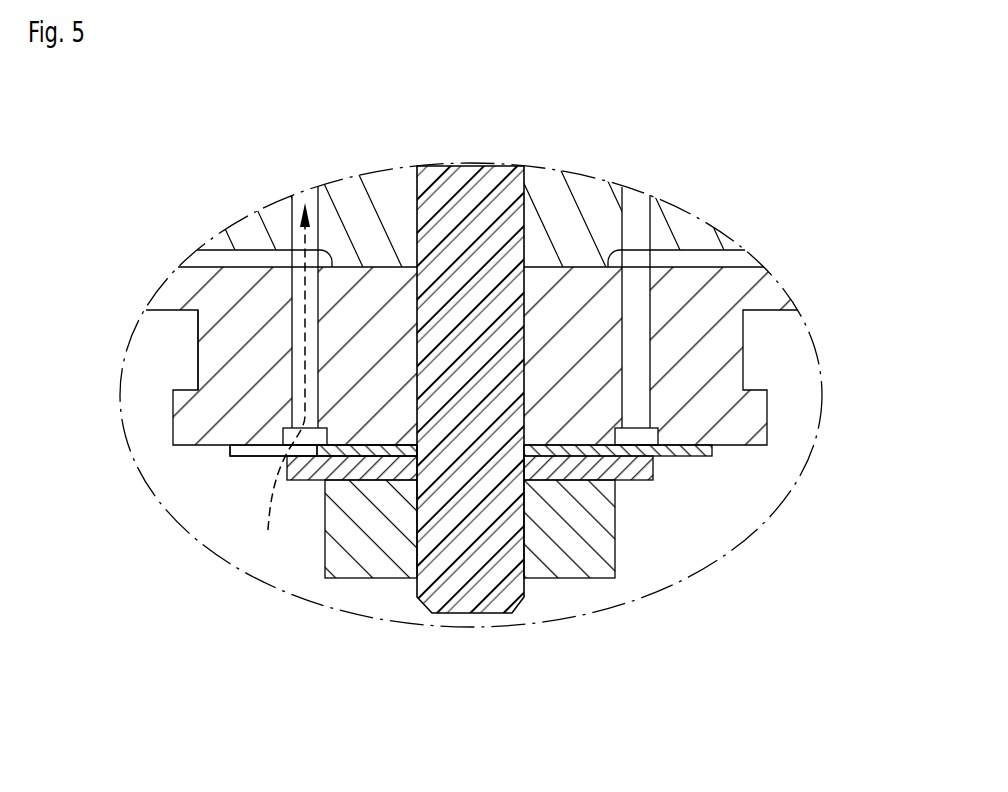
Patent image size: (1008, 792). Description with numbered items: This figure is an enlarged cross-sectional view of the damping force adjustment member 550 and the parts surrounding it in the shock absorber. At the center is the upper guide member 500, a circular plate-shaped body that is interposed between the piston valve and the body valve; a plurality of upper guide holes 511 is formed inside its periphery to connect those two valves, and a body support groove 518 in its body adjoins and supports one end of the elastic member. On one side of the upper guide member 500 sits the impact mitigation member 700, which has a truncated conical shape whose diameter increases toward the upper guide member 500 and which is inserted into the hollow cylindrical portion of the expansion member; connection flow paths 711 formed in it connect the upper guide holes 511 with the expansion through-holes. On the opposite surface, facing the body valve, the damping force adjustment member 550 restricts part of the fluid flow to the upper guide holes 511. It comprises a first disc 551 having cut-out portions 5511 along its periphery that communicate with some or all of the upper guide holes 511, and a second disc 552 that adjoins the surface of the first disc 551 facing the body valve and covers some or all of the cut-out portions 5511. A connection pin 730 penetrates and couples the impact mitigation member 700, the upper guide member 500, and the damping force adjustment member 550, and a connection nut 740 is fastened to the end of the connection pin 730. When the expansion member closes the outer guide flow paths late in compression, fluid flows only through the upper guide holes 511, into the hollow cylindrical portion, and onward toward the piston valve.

The upper guide member 500 is at (774, 420).
The upper guide hole 511 is at (636, 345).
The body support groove 518 is at (198, 358).
The damping force adjustment member 550 is at (521, 564).
The first disc 551 is at (680, 452).
The second disc 552 is at (625, 467).
The cut-out portion 5511 is at (248, 448).
The impact mitigation member 700 is at (558, 190).
The connection flow path 711 is at (628, 210).
The connection pin 730 is at (465, 602).
The connection nut 740 is at (562, 570).